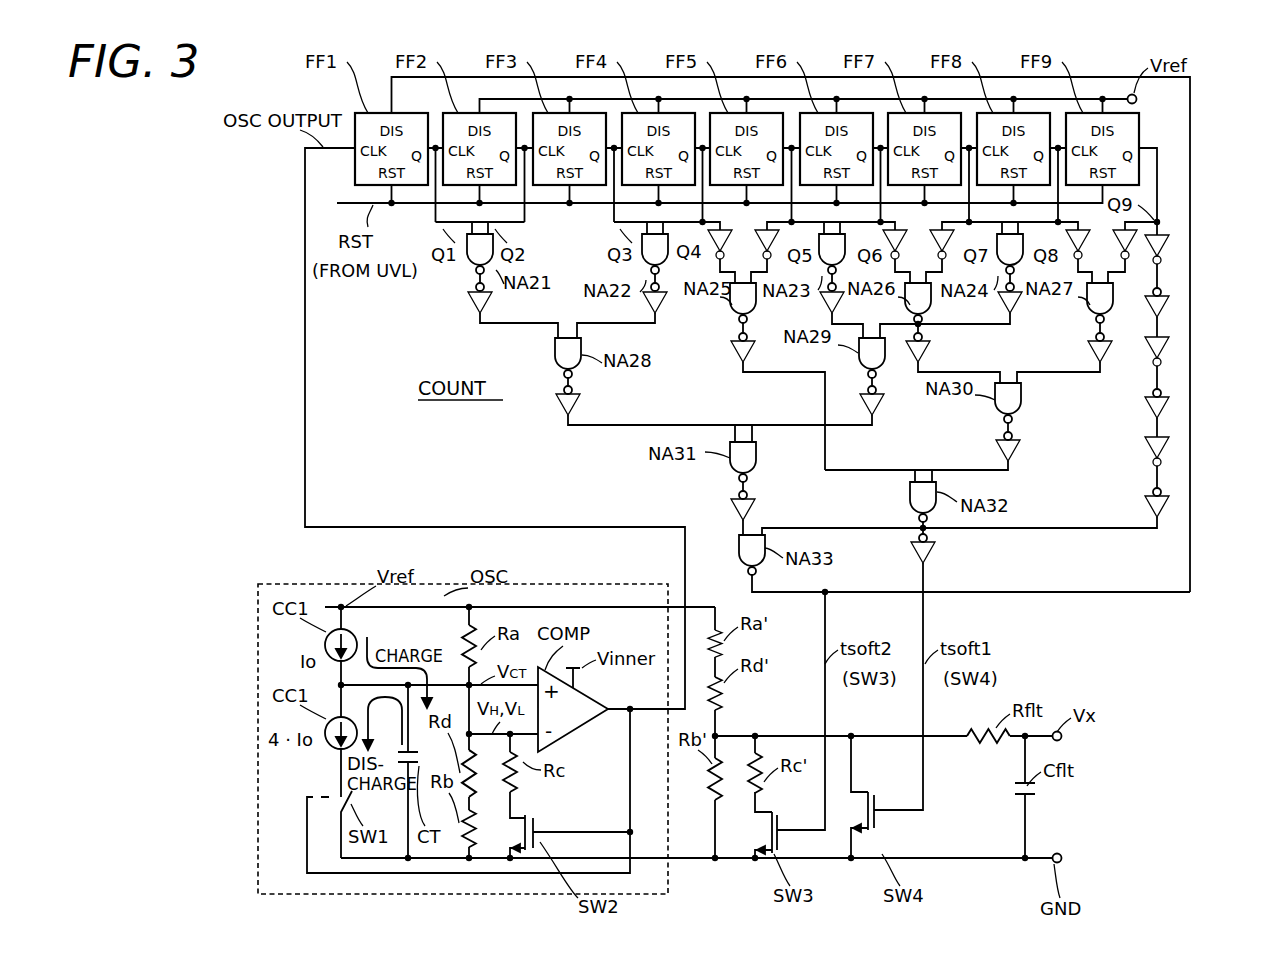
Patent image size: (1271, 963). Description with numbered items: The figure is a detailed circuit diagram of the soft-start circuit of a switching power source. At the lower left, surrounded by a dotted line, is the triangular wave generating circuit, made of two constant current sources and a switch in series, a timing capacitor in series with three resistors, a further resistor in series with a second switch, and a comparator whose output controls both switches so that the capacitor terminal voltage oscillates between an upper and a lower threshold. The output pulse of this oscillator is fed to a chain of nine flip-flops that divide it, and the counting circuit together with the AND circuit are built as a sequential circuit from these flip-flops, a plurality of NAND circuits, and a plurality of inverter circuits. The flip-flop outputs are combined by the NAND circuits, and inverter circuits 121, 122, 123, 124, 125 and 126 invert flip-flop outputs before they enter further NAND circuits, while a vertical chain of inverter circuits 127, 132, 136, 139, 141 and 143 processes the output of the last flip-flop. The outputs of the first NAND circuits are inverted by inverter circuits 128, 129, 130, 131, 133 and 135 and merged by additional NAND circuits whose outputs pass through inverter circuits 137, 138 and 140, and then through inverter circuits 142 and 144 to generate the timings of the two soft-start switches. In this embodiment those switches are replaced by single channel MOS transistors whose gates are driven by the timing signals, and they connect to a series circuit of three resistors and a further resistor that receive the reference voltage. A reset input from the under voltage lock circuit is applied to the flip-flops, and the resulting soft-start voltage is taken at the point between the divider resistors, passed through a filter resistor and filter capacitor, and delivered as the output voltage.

The inverter circuit 121 is at (723, 236).
The inverter circuit 122 is at (760, 246).
The inverter circuit 123 is at (897, 236).
The inverter circuit 124 is at (937, 246).
The inverter circuit 125 is at (1078, 237).
The inverter circuit 126 is at (1117, 246).
The inverter circuit 127 is at (1166, 245).
The inverter circuit 128 is at (490, 302).
The inverter circuit 129 is at (667, 302).
The inverter circuit 130 is at (844, 302).
The inverter circuit 131 is at (1022, 302).
The inverter circuit 132 is at (1166, 306).
The inverter circuit 133 is at (755, 350).
The inverter circuit 135 is at (1090, 353).
The inverter circuit 136 is at (1166, 347).
The inverter circuit 137 is at (580, 403).
The inverter circuit 138 is at (884, 403).
The inverter circuit 139 is at (1166, 405).
The inverter circuit 140 is at (1020, 448).
The inverter circuit 141 is at (1166, 445).
The inverter circuit 142 is at (755, 507).
The inverter circuit 143 is at (1166, 504).
The inverter circuit 144 is at (935, 555).